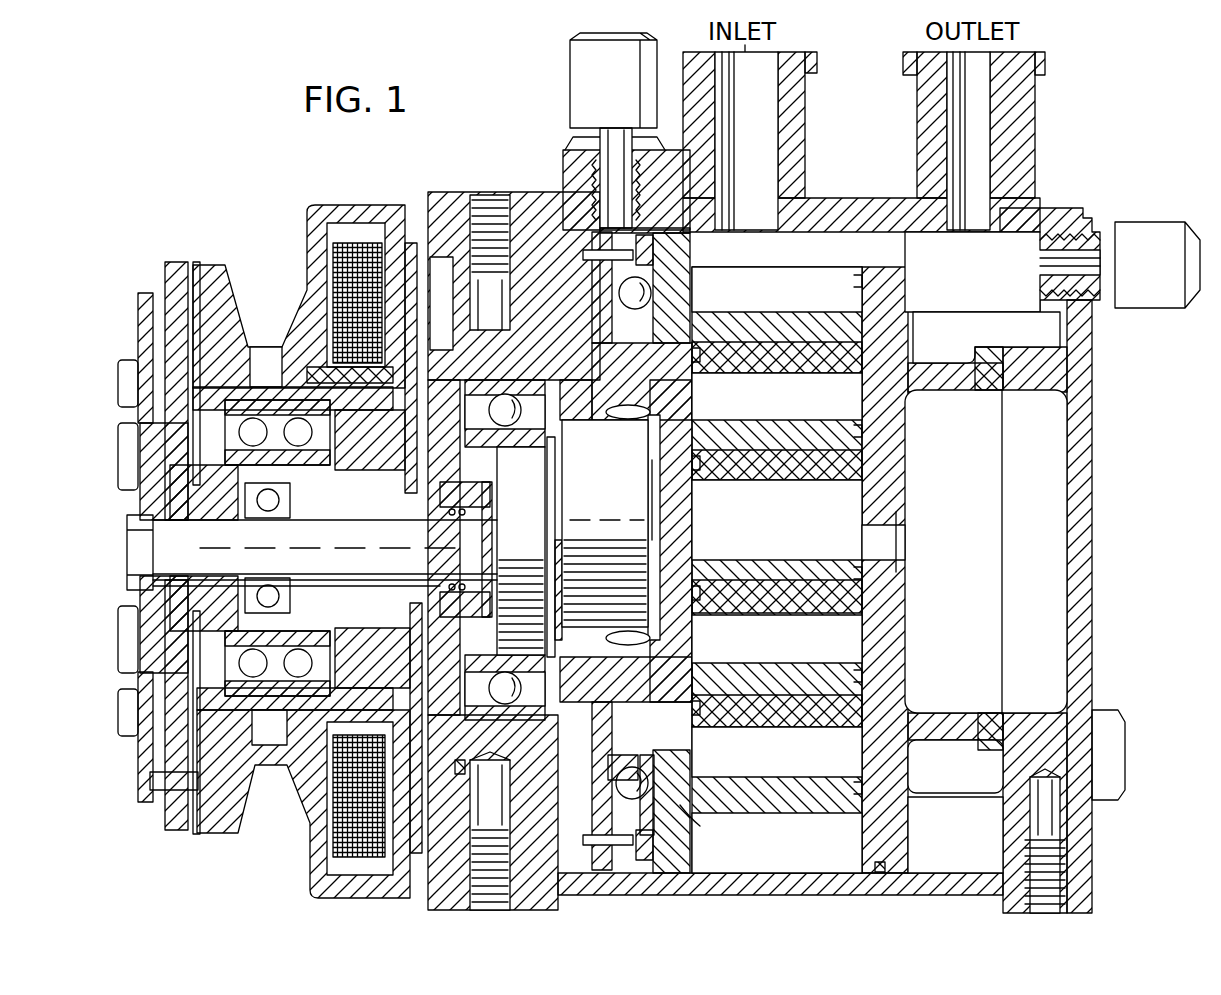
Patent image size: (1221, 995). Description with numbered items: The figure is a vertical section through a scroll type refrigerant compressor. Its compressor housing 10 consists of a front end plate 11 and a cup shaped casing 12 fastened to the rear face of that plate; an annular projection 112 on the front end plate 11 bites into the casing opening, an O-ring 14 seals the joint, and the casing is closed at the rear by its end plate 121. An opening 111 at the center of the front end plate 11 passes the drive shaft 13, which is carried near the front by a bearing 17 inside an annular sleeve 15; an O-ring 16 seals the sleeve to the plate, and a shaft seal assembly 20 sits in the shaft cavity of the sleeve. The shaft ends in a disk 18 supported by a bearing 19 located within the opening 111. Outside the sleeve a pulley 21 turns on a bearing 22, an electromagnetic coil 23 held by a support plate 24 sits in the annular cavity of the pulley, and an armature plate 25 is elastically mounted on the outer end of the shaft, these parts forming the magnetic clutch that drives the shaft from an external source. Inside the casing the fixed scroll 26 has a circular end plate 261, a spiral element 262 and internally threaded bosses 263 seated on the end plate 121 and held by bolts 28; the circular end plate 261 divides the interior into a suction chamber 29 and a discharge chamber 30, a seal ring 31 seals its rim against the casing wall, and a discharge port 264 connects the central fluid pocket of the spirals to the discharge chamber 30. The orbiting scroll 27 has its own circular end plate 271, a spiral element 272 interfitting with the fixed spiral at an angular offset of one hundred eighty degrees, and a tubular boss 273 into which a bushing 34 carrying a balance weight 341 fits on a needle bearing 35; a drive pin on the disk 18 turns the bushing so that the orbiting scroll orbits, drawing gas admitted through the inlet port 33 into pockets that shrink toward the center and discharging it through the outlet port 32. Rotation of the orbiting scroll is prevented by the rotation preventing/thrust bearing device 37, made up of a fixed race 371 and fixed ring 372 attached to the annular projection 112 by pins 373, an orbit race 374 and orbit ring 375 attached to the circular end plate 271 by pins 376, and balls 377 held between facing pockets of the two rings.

The compressor housing 10 is at (452, 190).
The front end plate 11 is at (455, 900).
The opening 111 is at (430, 665).
The annular projection 112 is at (593, 880).
The cup shaped casing 12 is at (1092, 571).
The end plate 121 is at (1085, 672).
The drive shaft 13 is at (400, 554).
The O-ring 14 is at (578, 228).
The annular sleeve 15 is at (332, 735).
The O-ring 16 is at (482, 755).
The bearing 17 is at (292, 622).
The disk 18 is at (603, 662).
The bearing 19 is at (505, 725).
The shaft seal assembly 20 is at (339, 600).
The pulley 21 is at (320, 215).
The bearing 22 is at (245, 672).
The electromagnetic coil 23 is at (365, 243).
The support plate 24 is at (412, 243).
The armature plate 25 is at (182, 833).
The fixed scroll 26 is at (910, 429).
The orbiting scroll 27 is at (700, 499).
The circular end plate 271 is at (688, 556).
The spiral element 272 is at (793, 717).
The tubular boss 273 is at (688, 392).
The bolts 28 is at (1122, 755).
The suction chamber 29 is at (811, 864).
The discharge chamber 30 is at (985, 616).
The circular end plate 261 is at (912, 662).
The spiral element 262 is at (802, 672).
The internally threaded bosses 263 is at (950, 758).
The discharge port 264 is at (900, 545).
The seal ring 31 is at (882, 875).
The outlet port 32 is at (1010, 120).
The inlet port 33 is at (790, 120).
The bushing 34 is at (640, 548).
The balance weight 341 is at (575, 745).
The needle bearing 35 is at (682, 420).
The rotation preventing/thrust bearing device 37 is at (640, 858).
The fixed race 371 is at (610, 845).
The fixed ring 372 is at (642, 856).
The pins 373 is at (605, 845).
The orbit race 374 is at (682, 810).
The orbit ring 375 is at (650, 845).
The pins 376 is at (660, 312).
The balls 377 is at (655, 298).